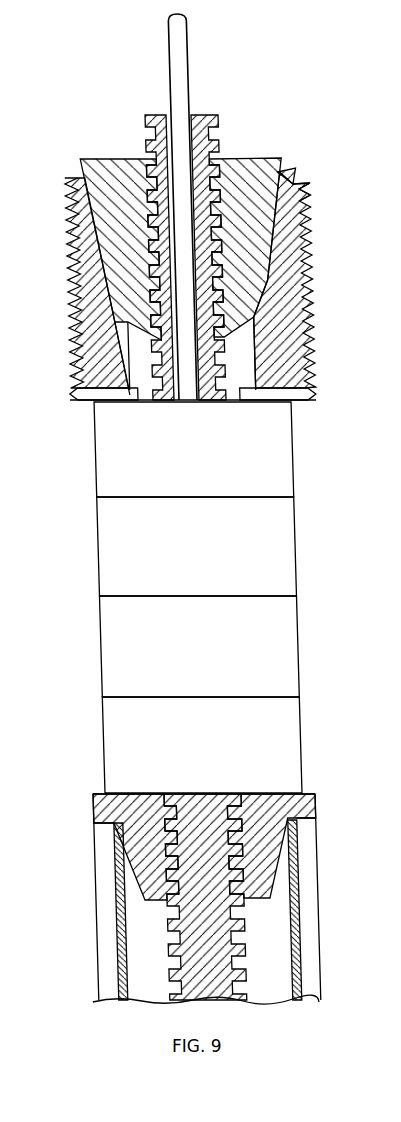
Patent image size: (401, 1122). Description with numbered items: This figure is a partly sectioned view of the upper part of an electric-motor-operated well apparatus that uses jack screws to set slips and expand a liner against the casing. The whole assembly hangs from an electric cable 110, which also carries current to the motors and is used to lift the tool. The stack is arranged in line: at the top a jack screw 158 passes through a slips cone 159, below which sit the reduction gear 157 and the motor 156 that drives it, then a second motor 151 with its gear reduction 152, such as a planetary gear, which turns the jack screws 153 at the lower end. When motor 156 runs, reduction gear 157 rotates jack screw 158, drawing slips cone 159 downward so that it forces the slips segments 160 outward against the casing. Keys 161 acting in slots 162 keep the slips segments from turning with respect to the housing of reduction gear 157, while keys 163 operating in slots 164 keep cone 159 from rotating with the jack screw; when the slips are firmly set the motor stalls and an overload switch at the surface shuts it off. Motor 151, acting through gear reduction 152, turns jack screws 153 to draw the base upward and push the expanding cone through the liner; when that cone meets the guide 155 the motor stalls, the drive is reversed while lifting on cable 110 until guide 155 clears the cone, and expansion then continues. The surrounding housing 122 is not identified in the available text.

The electric cable 110 is at (188, 62).
The jack screw 158 is at (217, 123).
The slips cone 159 is at (262, 157).
The slots 164 is at (285, 178).
The keys 163 is at (290, 190).
The slips segments 160 is at (307, 288).
The slots 162 is at (308, 391).
The keys 161 is at (280, 400).
The reduction gear 157 is at (293, 476).
The motor 156 is at (294, 549).
The motor 151 is at (298, 638).
The gear reduction 152 is at (300, 741).
The guide 155 is at (282, 852).
The jack screws 153 is at (243, 915).
The housing 122 is at (317, 972).